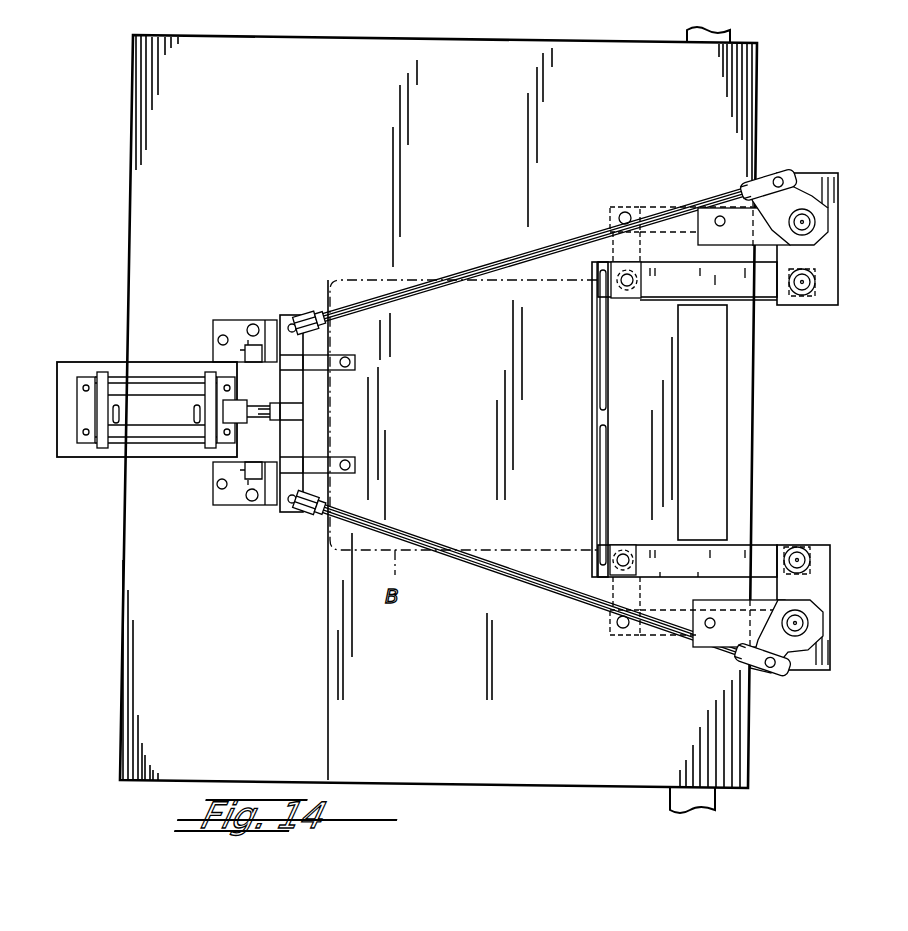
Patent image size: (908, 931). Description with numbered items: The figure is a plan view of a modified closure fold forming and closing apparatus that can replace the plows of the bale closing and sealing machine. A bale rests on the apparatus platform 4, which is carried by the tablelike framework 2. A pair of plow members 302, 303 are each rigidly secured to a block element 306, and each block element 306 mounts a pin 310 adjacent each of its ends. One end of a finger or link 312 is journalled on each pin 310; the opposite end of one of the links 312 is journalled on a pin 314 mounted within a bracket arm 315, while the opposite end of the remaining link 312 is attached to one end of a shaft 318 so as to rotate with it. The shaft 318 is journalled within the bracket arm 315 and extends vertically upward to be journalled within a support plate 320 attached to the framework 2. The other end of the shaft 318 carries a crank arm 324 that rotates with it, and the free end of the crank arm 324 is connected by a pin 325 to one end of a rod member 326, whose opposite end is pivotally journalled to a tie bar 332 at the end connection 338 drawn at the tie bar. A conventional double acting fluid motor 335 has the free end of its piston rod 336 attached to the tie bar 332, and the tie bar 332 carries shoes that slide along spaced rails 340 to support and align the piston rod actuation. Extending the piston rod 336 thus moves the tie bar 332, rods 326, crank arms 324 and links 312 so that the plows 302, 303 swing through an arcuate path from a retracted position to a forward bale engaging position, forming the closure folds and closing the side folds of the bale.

The tablelike framework 2 is at (438, 420).
The apparatus platform 4 is at (680, 418).
The plow member 302 is at (608, 457).
The plow member 303 is at (608, 360).
The block element 306 is at (627, 302).
The pin 310 is at (596, 552).
The finger or link 312 is at (645, 211).
The pin 314 is at (816, 286).
The bracket arm 315 is at (838, 258).
The shaft 318 is at (816, 216).
The support plate 320 is at (709, 247).
The crank arm 324 is at (800, 194).
The pin 325 is at (774, 177).
The rod member 326 is at (482, 263).
The tie bar 332 is at (303, 410).
The double acting fluid motor 335 is at (147, 409).
The piston rod 336 is at (255, 410).
The clevis 338 is at (306, 310).
The rail 340 is at (347, 354).